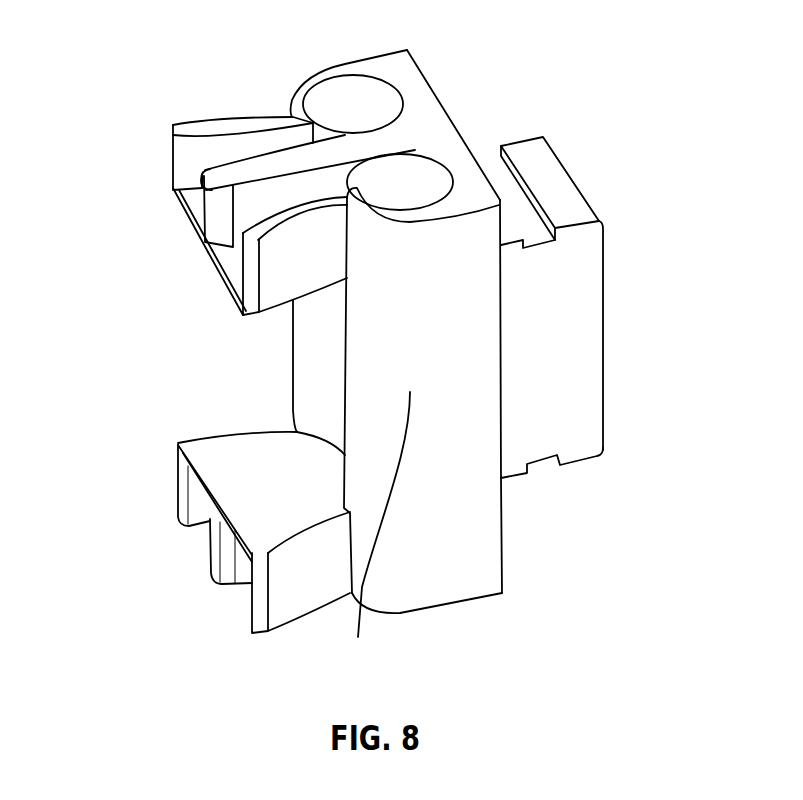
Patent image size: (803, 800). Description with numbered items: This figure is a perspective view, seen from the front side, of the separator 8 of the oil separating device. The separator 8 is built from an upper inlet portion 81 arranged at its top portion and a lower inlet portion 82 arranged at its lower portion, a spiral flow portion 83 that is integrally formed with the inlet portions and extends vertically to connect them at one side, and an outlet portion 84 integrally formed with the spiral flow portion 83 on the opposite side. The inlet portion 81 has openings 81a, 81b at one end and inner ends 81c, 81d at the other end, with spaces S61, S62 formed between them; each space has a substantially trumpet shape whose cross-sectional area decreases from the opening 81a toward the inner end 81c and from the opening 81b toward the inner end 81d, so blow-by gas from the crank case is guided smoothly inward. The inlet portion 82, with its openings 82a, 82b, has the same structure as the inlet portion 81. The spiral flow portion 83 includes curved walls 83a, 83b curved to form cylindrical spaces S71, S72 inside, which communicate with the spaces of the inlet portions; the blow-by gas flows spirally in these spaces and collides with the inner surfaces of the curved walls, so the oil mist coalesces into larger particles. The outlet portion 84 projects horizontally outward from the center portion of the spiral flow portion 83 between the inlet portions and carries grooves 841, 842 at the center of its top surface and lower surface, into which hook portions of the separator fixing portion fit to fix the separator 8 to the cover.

The separator 8 is at (138, 102).
The inlet portion 81 is at (178, 166).
The opening 81a is at (180, 195).
The opening 81b is at (232, 266).
The inner end 81c is at (326, 133).
The inner end 81d is at (350, 178).
The space S61 is at (210, 155).
The space S62 is at (242, 215).
The cylindrical space S71 is at (353, 83).
The cylindrical space S72 is at (407, 164).
The inlet portion 82 is at (210, 545).
The opening 82a is at (196, 507).
The opening 82b is at (230, 583).
The spiral flow portion 83 is at (498, 572).
The curved wall 83a is at (297, 366).
The curved wall 83b is at (420, 633).
The outlet portion 84 is at (595, 378).
The groove 841 is at (538, 223).
The groove 842 is at (542, 460).